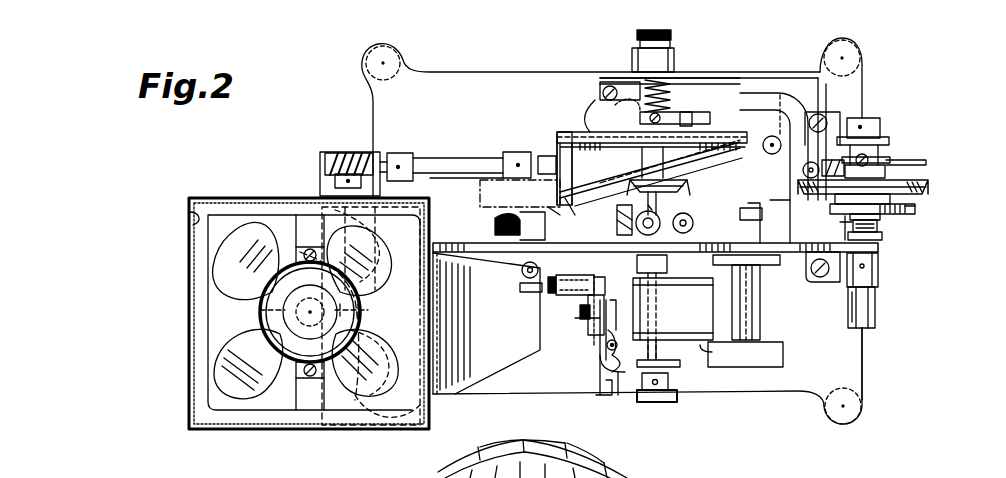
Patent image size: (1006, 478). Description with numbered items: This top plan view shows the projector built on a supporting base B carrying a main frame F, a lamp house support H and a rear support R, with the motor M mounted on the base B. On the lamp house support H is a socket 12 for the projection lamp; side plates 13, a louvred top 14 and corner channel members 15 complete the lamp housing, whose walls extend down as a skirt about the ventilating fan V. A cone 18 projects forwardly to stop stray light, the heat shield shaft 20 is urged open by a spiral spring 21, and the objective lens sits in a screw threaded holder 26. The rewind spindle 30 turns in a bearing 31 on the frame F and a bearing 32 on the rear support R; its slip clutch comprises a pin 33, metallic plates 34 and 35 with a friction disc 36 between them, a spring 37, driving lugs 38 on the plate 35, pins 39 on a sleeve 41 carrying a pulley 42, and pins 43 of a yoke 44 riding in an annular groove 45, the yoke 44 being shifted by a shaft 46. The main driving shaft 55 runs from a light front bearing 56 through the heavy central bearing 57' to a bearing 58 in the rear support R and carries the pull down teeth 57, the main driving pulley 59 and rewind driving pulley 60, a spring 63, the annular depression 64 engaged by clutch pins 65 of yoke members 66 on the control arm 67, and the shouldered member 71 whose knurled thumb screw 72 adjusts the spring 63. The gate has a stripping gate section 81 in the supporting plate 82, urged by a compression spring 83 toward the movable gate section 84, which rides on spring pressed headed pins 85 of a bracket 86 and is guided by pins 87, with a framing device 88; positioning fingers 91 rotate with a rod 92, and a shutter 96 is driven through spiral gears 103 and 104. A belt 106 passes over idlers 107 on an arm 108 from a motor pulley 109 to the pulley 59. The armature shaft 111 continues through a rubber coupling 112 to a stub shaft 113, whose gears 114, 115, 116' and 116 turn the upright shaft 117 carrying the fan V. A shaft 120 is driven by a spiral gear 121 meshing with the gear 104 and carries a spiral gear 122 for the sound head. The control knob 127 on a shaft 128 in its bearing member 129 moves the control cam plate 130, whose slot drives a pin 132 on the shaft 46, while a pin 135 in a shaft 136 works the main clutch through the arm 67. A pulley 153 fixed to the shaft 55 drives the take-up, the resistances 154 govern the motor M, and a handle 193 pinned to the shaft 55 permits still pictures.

The socket 12 is at (305, 308).
The side plates 13 is at (189, 358).
The louvred top 14 is at (408, 425).
The channel members 15 is at (189, 226).
The cone 18 is at (492, 358).
The shaft 20 is at (522, 270).
The spiral spring 21 is at (520, 288).
The screw threaded holder 26 is at (704, 352).
The rewind spindle 30 is at (875, 303).
The bearing 31 is at (878, 268).
The bearing 32 is at (878, 118).
The pin 33 is at (877, 228).
The metallic plate 34 is at (880, 218).
The metallic plate 35 is at (915, 207).
The friction disc 36 is at (915, 212).
The spring 37 is at (882, 236).
The driving lugs 38 is at (890, 198).
The pins 39 is at (885, 172).
The sleeve 41 is at (888, 157).
The pulley 42 is at (918, 186).
The pins 43 is at (862, 154).
The yoke 44 is at (835, 160).
The annular groove 45 is at (890, 160).
The shaft 46 is at (811, 162).
The main driving shaft 55 is at (672, 367).
The front bearing 56 is at (668, 385).
The pull down teeth 57 is at (673, 316).
The central bearing 57' is at (670, 279).
The bearing 58 is at (632, 55).
The main driving pulley 59 is at (600, 105).
The rewind driving pulley 60 is at (708, 176).
The spring 63 is at (668, 80).
The annular depression 64 is at (610, 78).
The clutch pins 65 is at (680, 112).
The yoke members 66 is at (688, 112).
The control arm 67 is at (772, 145).
The shouldered member 71 is at (640, 44).
The knurled thumb screw 72 is at (646, 30).
The stripping gate section 81 is at (608, 350).
The film-guiding plate 82 is at (612, 394).
The compression spring 83 is at (556, 285).
The gate section 84 is at (600, 325).
The spring pressed headed pins 85 is at (585, 318).
The movable bracket 86 is at (588, 302).
The pins 87 is at (556, 292).
The framing device 88 is at (604, 372).
The positioning fingers 91 is at (600, 340).
The rod 92 is at (620, 395).
The shutter 96 is at (600, 394).
The spiral gear 103 is at (694, 224).
The spiral gear 104 is at (688, 186).
The belt 106 is at (592, 125).
The idlers 107 is at (530, 185).
The arm 108 is at (642, 162).
The pulley 109 is at (557, 140).
The armature shaft 111 is at (508, 152).
The rubber coupling 112 is at (425, 158).
The stub shaft 113 is at (387, 155).
The gear 114 is at (348, 153).
The gear 115 is at (330, 152).
The gear 116 is at (286, 312).
The gear 116' is at (388, 313).
The upright shaft 117 is at (292, 290).
The shaft 120 is at (560, 215).
The spiral gear 121 is at (660, 210).
The spiral gear 122 is at (496, 220).
The control knob 127 is at (798, 391).
The shaft 128 is at (760, 312).
The column plate 129 is at (760, 292).
The control cam plate 130 is at (762, 203).
The pin 132 is at (848, 228).
The pin 135 is at (772, 212).
The shaft 136 is at (818, 78).
The pulley 153 is at (640, 214).
The resistances 154 is at (838, 474).
The handle 193 is at (652, 402).
The supporting base B is at (865, 352).
The main frame F is at (772, 258).
The lamp house support H is at (330, 200).
The motor M is at (610, 132).
The rear support R is at (738, 76).
The ventilating fan V is at (250, 372).